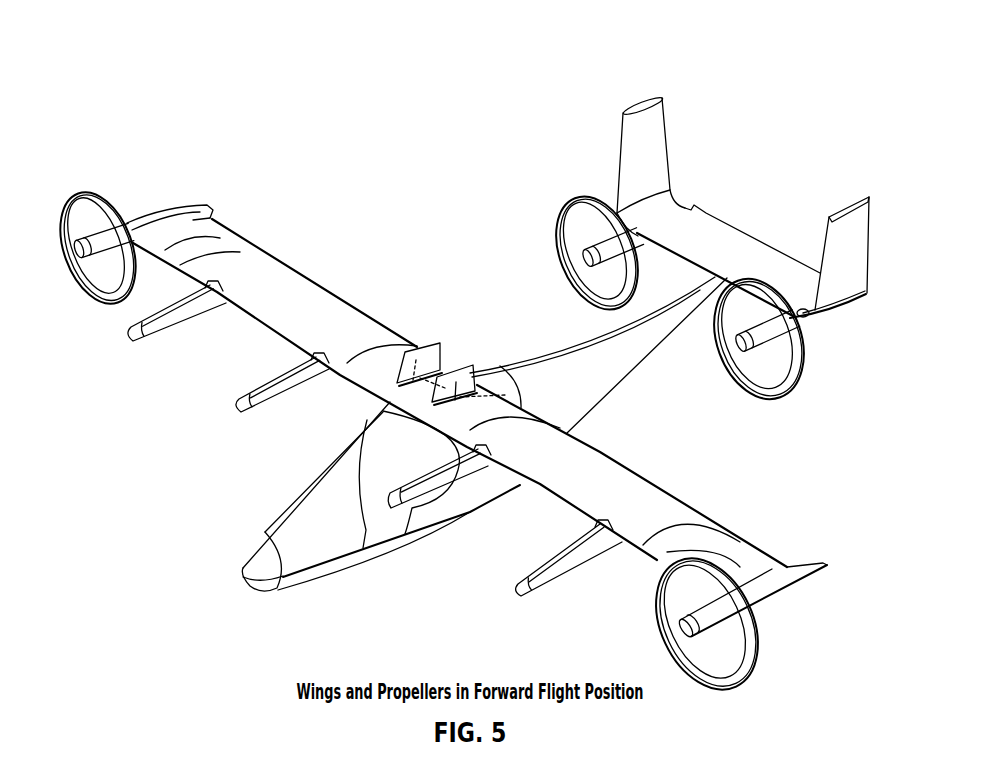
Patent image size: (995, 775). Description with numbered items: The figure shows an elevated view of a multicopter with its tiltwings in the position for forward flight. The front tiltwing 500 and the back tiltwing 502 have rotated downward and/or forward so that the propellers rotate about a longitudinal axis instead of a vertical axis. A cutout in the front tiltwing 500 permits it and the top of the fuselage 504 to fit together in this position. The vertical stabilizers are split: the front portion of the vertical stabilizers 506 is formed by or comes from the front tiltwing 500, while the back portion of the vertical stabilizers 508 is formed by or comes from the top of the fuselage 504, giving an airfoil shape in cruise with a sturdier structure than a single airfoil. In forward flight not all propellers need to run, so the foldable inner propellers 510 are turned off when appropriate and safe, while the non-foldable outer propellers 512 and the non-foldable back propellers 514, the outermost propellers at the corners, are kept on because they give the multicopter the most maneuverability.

The front tiltwing 500 is at (220, 230).
The back tiltwing 502 is at (647, 97).
The fuselage 504 is at (637, 357).
The front portion of vertical stabilizers 506 is at (410, 364).
The back portion of vertical stabilizers 508 is at (436, 362).
The foldable inner propellers 510 is at (133, 343).
The non-foldable outer propellers 512 is at (790, 637).
The non-foldable back propellers 514 is at (578, 198).